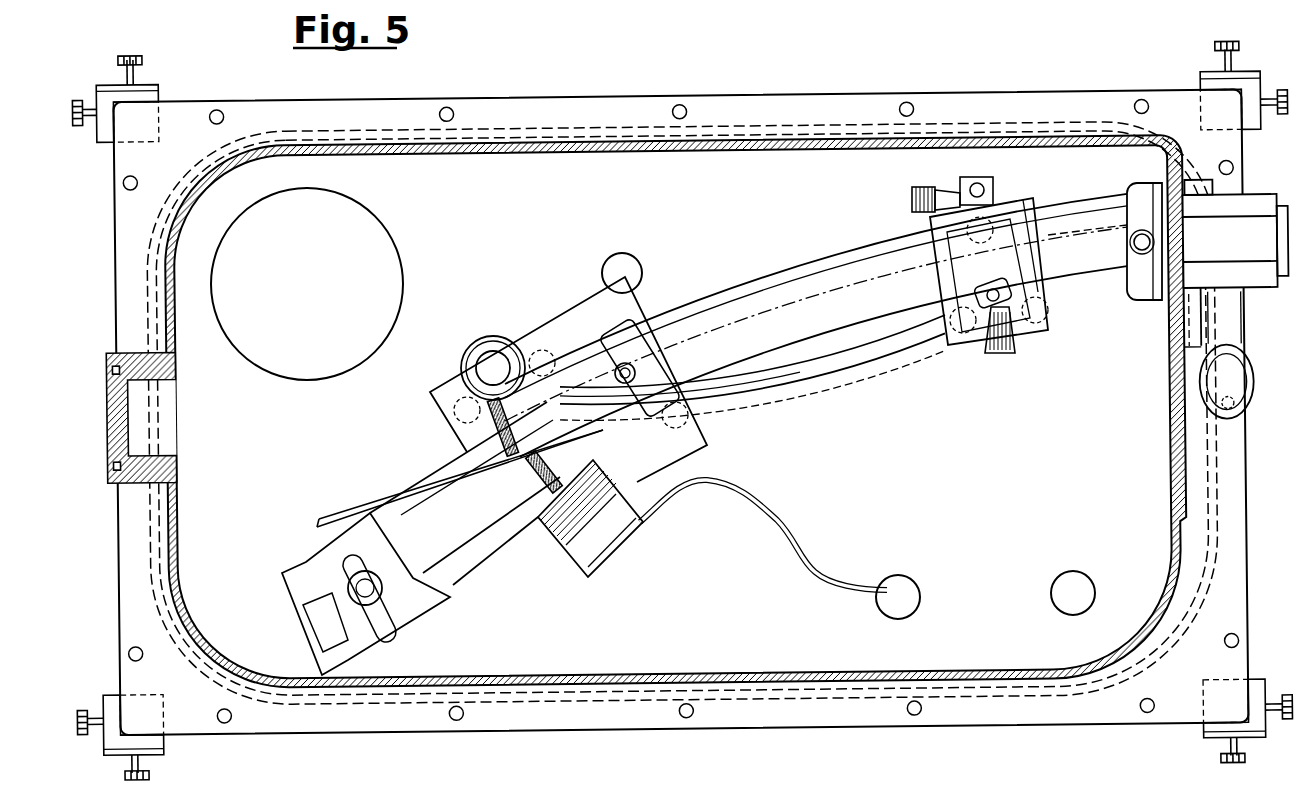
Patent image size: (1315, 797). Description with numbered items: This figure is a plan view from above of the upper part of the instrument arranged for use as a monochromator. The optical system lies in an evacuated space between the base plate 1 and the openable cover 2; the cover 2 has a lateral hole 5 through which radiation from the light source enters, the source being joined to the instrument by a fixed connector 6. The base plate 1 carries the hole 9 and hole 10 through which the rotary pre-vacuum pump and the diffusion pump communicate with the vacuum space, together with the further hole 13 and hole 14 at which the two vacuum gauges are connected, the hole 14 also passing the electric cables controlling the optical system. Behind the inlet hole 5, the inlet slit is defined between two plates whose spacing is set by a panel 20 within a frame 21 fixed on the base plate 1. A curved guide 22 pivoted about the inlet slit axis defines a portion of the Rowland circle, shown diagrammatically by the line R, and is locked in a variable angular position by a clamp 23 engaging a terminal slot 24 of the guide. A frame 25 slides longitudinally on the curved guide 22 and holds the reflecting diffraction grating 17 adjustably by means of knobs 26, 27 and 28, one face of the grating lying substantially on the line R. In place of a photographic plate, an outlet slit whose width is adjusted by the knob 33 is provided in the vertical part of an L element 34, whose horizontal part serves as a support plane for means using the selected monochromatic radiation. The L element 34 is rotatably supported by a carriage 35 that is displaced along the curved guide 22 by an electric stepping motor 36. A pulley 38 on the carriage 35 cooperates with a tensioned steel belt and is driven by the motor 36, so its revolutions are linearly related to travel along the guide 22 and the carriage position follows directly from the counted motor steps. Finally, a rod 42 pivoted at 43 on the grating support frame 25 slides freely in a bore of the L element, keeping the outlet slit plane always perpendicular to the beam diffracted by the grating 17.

The base plate 1 is at (683, 172).
The openable cover 2 is at (497, 140).
The lateral hole 5 is at (1173, 256).
The fixed connector 6 is at (1255, 255).
The hole 9 is at (632, 257).
The hole 10 is at (385, 237).
The hole 13 is at (1090, 583).
The hole 14 is at (915, 588).
The reflecting diffraction grating 17 is at (1050, 213).
The panel 20 is at (1142, 230).
The frame 21 is at (1152, 302).
The curved guide 22 is at (852, 378).
The clamp 23 is at (367, 588).
The terminal slot 24 is at (388, 633).
The frame 25 is at (1041, 347).
The knob 26 is at (1002, 360).
The knob 27 is at (985, 186).
The knob 28 is at (910, 200).
The knob 33 is at (633, 373).
The L element 34 is at (597, 410).
The carriage 35 is at (562, 323).
The electric stepping motor 36 is at (580, 532).
The pulley 38 is at (483, 347).
The rod 42 is at (777, 372).
The pivot 43 is at (992, 302).
The line of the Rowland circle R is at (763, 313).